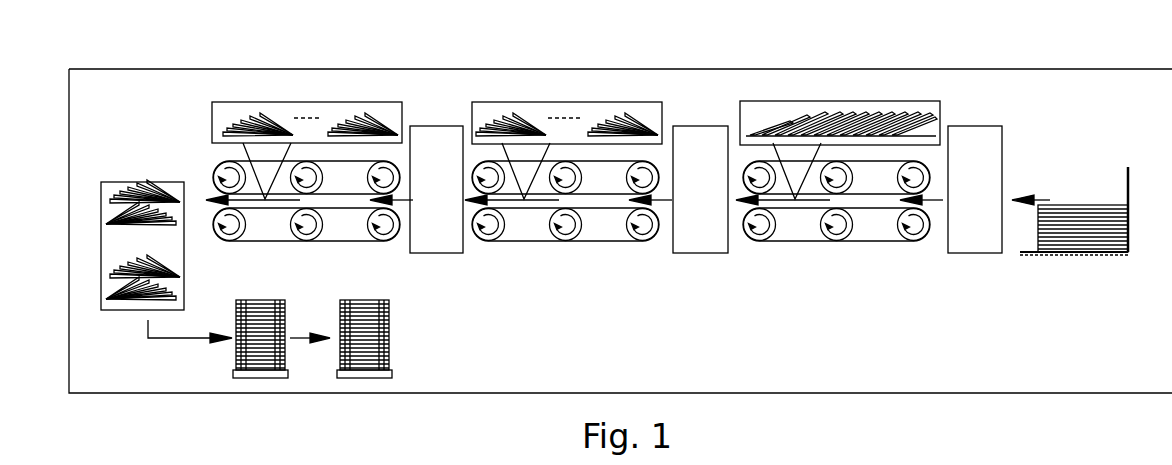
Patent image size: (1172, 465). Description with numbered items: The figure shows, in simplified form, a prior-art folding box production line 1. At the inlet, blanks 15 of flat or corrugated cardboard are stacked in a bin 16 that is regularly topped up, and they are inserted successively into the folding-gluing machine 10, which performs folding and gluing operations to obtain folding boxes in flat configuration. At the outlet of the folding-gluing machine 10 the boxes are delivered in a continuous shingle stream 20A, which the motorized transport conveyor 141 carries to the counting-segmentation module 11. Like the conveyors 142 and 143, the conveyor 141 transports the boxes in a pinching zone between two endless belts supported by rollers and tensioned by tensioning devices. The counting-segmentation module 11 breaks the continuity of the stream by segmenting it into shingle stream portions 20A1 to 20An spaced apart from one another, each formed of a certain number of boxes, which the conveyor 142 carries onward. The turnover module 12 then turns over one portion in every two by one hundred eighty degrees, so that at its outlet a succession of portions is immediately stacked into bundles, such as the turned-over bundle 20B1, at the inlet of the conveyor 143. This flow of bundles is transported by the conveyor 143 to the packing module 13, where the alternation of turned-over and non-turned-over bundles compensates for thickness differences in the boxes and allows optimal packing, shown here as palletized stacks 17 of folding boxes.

The production line 1 is at (994, 69).
The folding-gluing machine 10 is at (962, 201).
The counting-segmentation module 11 is at (687, 201).
The turnover module 12 is at (424, 201).
The packing module 13 is at (116, 190).
The blanks 15 is at (1073, 205).
The bin 16 is at (1130, 174).
The palletized stacks 17 is at (340, 322).
The shingle stream 20A is at (912, 120).
The shingle stream portion 20A1 is at (520, 120).
The shingle stream portion 20An is at (370, 120).
The bundle 20B1 is at (242, 130).
The motorized transport conveyor 141 is at (870, 233).
The motorized transport conveyor 142 is at (538, 233).
The motorized transport conveyor 143 is at (345, 232).